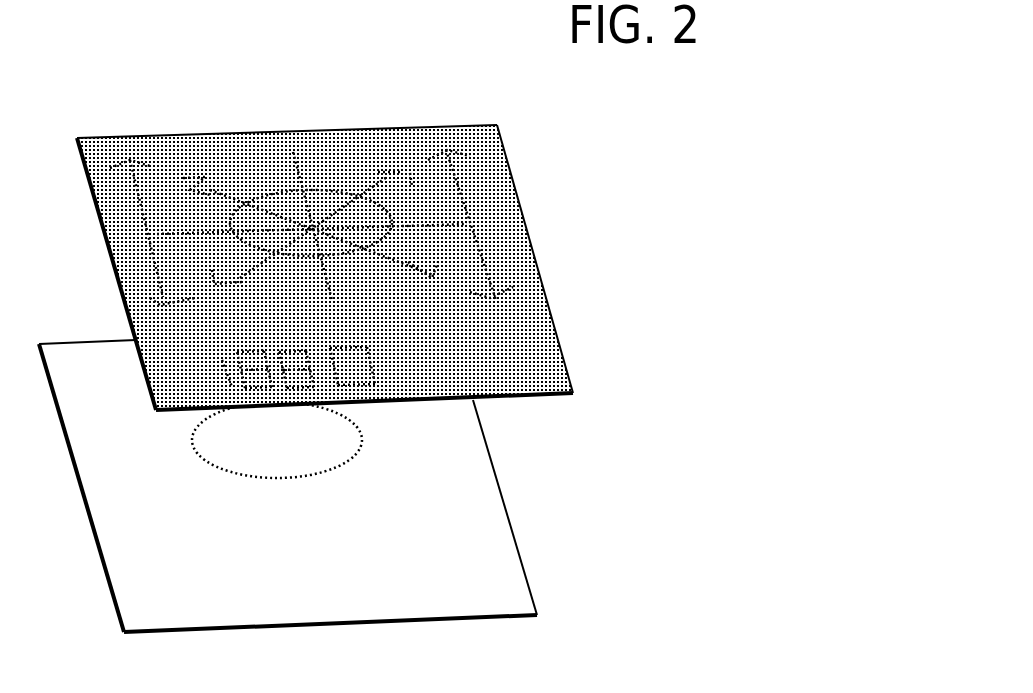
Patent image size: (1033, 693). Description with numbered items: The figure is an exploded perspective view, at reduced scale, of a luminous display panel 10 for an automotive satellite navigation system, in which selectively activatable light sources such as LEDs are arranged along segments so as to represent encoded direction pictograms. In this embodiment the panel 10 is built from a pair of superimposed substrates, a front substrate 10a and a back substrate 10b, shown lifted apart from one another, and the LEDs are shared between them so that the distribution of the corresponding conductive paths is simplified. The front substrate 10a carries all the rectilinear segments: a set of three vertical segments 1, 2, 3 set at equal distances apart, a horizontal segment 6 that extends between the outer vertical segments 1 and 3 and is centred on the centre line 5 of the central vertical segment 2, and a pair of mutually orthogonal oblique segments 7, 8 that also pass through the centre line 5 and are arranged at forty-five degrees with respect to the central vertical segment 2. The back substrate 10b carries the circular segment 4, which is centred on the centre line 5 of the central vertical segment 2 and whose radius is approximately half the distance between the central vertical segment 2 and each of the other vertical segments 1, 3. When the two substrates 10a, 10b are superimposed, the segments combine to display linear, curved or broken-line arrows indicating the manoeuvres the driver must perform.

The vertical segment 1 is at (148, 203).
The central vertical segment 2 is at (297, 179).
The vertical segment 3 is at (458, 182).
The circular segment 4 is at (318, 478).
The centre line 5 is at (308, 230).
The horizontal segment 6 is at (193, 233).
The oblique segment 7 is at (222, 197).
The oblique segment 8 is at (235, 273).
The panel 10 is at (364, 363).
The front substrate 10a is at (361, 238).
The back substrate 10b is at (308, 500).